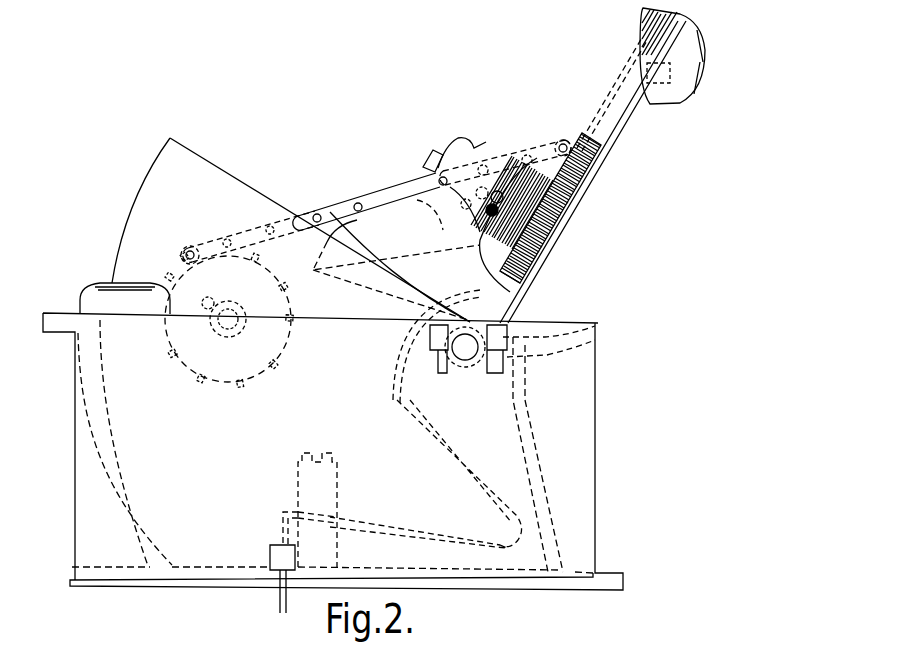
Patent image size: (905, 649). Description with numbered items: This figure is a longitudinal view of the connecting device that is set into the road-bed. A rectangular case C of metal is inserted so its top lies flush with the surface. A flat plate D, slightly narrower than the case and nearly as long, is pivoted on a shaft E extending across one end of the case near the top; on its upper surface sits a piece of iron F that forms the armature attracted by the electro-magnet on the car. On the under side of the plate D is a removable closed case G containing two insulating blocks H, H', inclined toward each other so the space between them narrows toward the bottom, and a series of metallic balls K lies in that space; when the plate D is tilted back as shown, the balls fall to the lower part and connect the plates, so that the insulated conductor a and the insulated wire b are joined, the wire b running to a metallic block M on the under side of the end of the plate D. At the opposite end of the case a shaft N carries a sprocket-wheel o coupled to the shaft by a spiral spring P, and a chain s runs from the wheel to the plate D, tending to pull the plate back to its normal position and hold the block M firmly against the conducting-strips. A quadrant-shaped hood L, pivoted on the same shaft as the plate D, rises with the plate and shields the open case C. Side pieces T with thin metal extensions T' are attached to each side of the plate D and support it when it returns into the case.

The rectangular case C is at (597, 452).
The quadrant-shaped hood L is at (275, 230).
The extensions of thin metal T' is at (396, 261).
The chain s is at (312, 207).
The removable closed case of metal G is at (466, 136).
The side pieces T is at (505, 147).
The flat plate D is at (577, 207).
The insulated wire b is at (623, 93).
The piece of iron F is at (690, 68).
The metallic block M is at (645, 18).
The insulating block H is at (550, 208).
The metallic balls K is at (501, 224).
The insulating block H' is at (451, 212).
The sprocket-wheel o is at (270, 280).
The shaft N is at (243, 316).
The spiral spring P is at (243, 327).
The shaft E is at (468, 349).
The insulated conductor a is at (530, 318).
The flange f is at (568, 333).
The valve body k is at (330, 488).